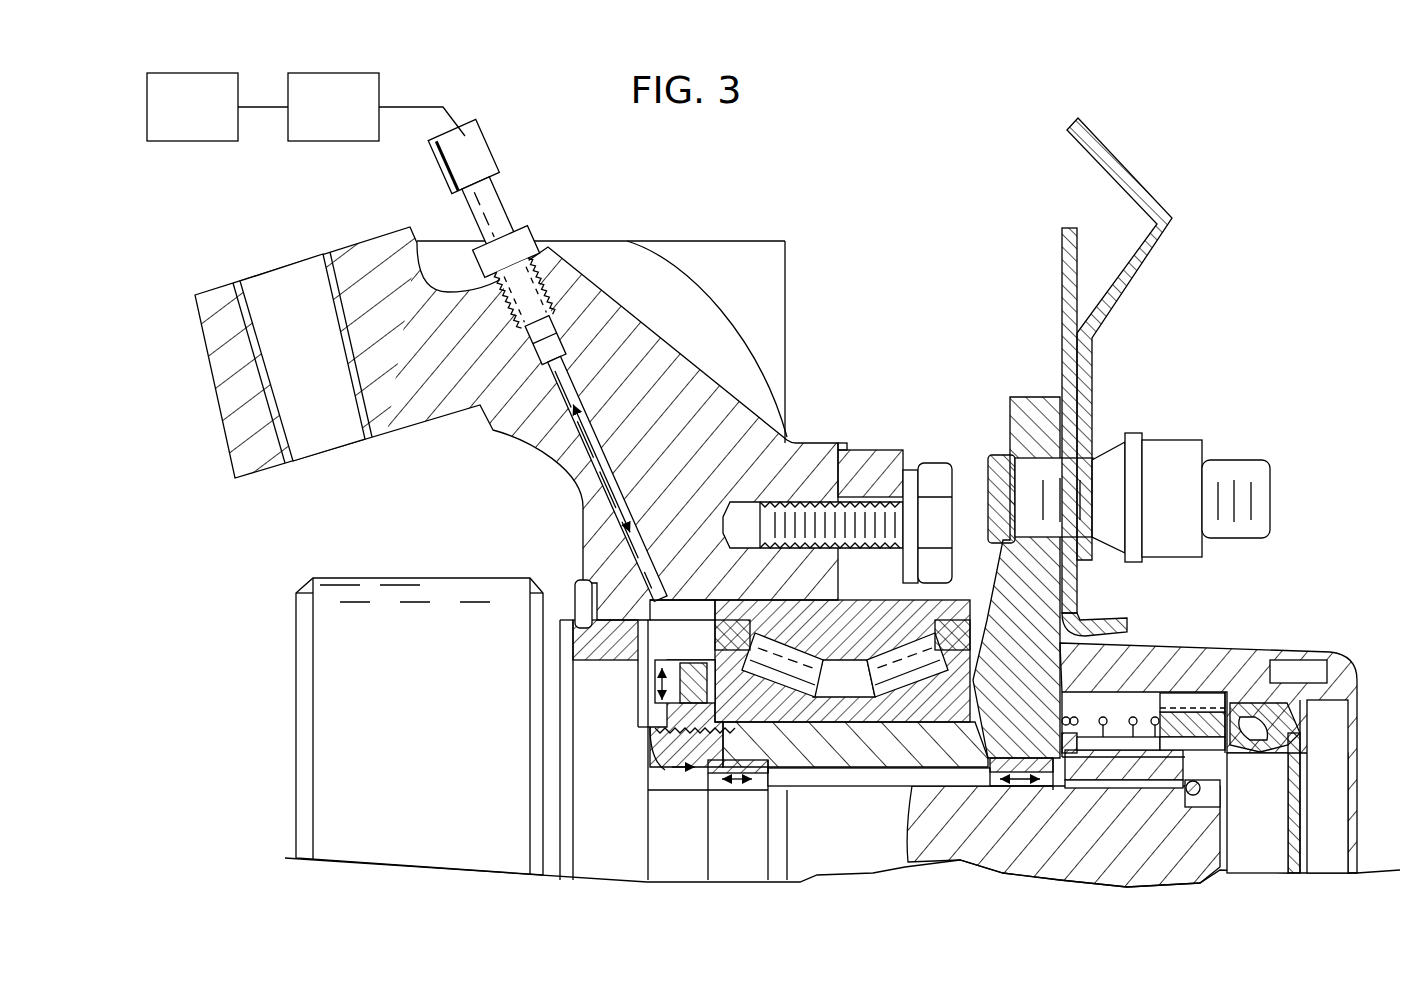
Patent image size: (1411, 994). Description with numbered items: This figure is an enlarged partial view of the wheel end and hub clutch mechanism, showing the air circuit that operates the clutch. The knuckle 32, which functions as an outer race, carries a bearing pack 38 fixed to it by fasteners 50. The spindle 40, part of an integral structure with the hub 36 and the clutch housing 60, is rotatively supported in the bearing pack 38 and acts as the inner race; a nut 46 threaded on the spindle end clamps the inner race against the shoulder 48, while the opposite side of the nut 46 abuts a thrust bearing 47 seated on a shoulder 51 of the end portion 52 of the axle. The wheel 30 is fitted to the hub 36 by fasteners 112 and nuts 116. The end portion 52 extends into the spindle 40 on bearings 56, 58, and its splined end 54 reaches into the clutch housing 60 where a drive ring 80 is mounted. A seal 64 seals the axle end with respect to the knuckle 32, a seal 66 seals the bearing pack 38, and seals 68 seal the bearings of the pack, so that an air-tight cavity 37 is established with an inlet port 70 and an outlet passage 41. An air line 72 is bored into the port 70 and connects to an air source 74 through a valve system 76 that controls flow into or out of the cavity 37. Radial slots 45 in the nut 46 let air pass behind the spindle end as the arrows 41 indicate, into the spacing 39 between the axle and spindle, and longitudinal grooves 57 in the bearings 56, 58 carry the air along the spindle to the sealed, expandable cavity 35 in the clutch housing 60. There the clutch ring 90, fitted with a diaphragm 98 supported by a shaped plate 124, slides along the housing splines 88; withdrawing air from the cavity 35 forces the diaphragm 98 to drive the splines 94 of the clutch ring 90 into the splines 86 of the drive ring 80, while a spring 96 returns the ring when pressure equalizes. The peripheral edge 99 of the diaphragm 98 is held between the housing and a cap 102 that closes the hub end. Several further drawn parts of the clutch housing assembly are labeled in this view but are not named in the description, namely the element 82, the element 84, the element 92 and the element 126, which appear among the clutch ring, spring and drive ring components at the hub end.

The wheel 30 is at (1128, 170).
The knuckle 32 is at (838, 443).
The cavity 35 is at (1235, 850).
The hub 36 is at (988, 620).
The cavity 37 is at (685, 613).
The bearing pack 38 is at (880, 450).
The spacing 39 is at (817, 778).
The spindle 40 is at (843, 768).
The passage 41 is at (663, 695).
The radial slots 45 is at (662, 690).
The nut 46 is at (653, 763).
The thrust bearing 47 is at (647, 683).
The shoulder 48 is at (918, 695).
The fasteners 50 is at (935, 468).
The shoulder 51 is at (657, 747).
The end portion 52 is at (864, 859).
The splined end 54 is at (1075, 787).
The bearing 56 is at (757, 778).
The longitudinal grooves 57 is at (720, 778).
The bearing 58 is at (1002, 783).
The clutch housing 60 is at (1153, 643).
The seal 64 is at (597, 638).
The seal 66 is at (818, 585).
The seals 68 is at (730, 640).
The inlet port 70 is at (595, 430).
The air line 72 is at (493, 148).
The air source 74 is at (200, 141).
The valve system 76 is at (328, 141).
The drive ring 80 is at (1142, 770).
The spacer 82 is at (1125, 783).
The fastener 84 is at (1193, 800).
The splines 86 is at (1125, 740).
The splines 88 is at (1246, 700).
The clutch ring 90 is at (1197, 720).
The seal case 92 is at (1176, 700).
The splines 94 is at (1203, 747).
The spring 96 is at (1078, 722).
The diaphragm 98 is at (1303, 800).
The peripheral edge 99 is at (1262, 660).
The cap 102 is at (1363, 663).
The fasteners 112 is at (1002, 465).
The nuts 116 is at (1170, 440).
The support plate 124 is at (1222, 712).
The cavity 126 is at (1287, 806).